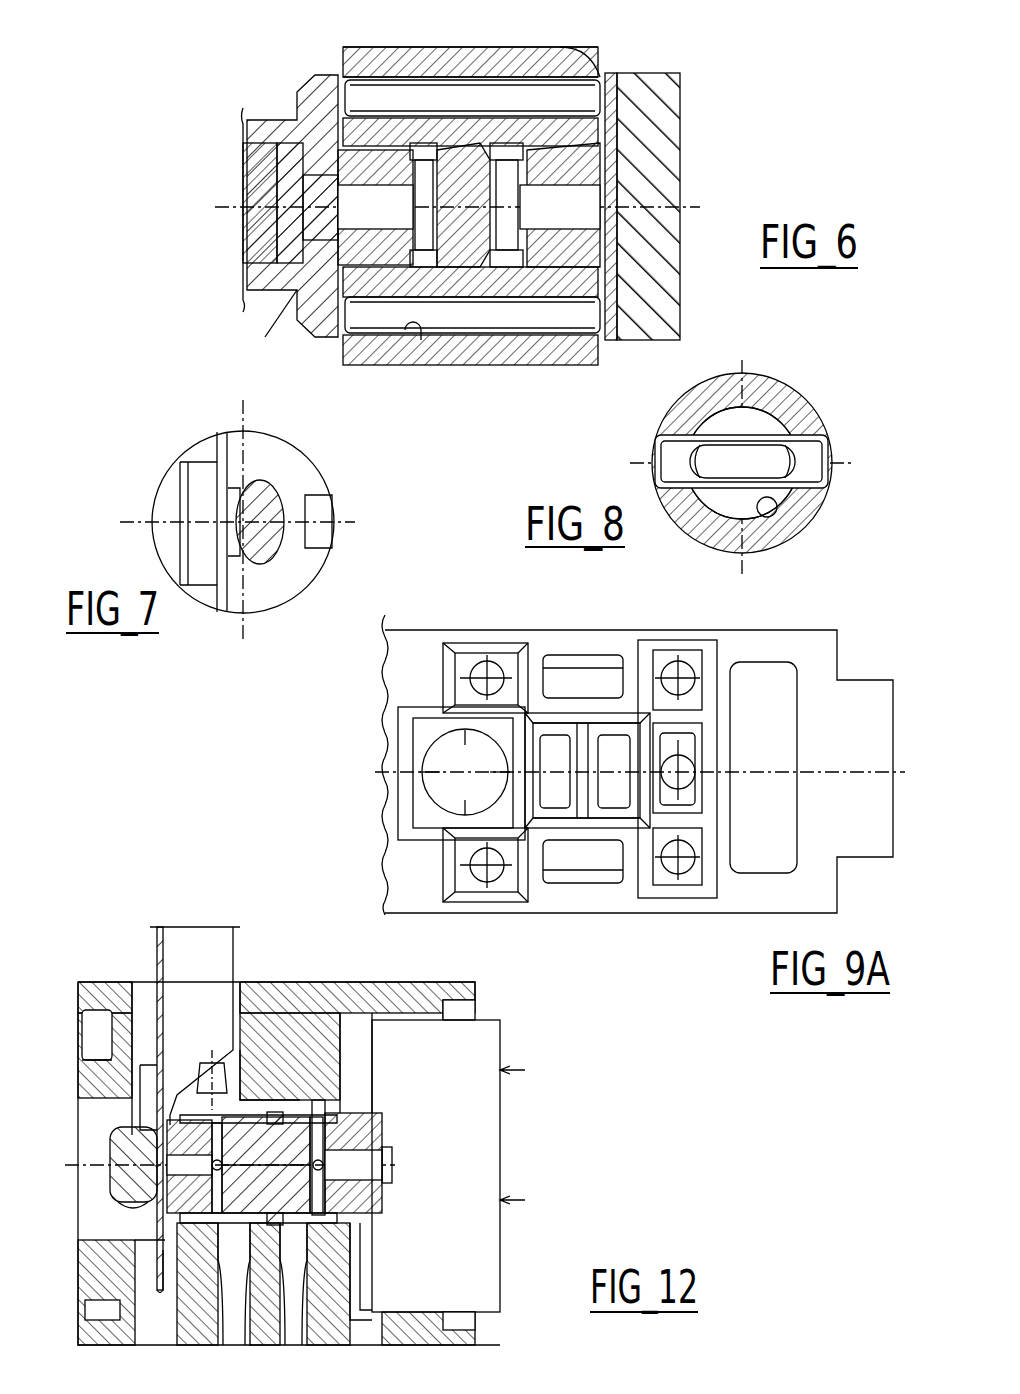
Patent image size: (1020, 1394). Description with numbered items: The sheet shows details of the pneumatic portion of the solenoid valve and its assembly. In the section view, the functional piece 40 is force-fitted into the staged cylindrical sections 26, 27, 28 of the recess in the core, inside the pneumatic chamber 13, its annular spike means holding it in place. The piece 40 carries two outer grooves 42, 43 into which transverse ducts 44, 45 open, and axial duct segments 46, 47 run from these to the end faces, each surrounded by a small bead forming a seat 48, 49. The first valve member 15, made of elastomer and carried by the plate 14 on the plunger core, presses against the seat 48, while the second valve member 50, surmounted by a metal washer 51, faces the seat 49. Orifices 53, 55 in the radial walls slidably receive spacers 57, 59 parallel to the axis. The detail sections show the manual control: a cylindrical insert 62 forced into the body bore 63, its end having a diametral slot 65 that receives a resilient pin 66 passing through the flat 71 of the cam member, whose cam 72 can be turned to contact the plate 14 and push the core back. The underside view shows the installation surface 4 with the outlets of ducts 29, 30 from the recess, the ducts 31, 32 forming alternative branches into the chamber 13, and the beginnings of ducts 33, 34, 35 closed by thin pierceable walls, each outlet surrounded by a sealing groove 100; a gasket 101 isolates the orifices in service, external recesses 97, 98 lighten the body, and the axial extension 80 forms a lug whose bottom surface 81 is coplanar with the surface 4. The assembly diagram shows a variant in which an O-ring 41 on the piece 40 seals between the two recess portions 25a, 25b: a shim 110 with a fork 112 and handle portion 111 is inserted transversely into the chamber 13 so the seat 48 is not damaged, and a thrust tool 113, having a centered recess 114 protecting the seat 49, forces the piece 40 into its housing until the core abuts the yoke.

In FIG. 9A, the bottom surface 4 is at (725, 645).
In FIG. 12, the second hollow section 13 is at (330, 985).
In FIG. 6, the plate 14 is at (290, 340).
In FIG. 7, the plate 14 is at (214, 442).
In FIG. 12, the plate 14 is at (115, 1003).
In FIG. 6, the first valve member 15 is at (248, 240).
In FIG. 12, the portion of the recess 25a is at (225, 1025).
In FIG. 12, the portion of the recess 25b is at (355, 1030).
In FIG. 6, the cylindrical section 26 is at (355, 305).
In FIG. 6, the cylindrical section 27 is at (430, 270).
In FIG. 6, the cylindrical section 28 is at (600, 255).
In FIG. 9A, the duct 29 is at (567, 782).
In FIG. 9A, the duct 30 is at (624, 782).
In FIG. 9A, the duct 31 is at (495, 872).
In FIG. 9A, the duct 32 is at (495, 672).
In FIG. 9A, the beginning of duct 33 is at (686, 865).
In FIG. 9A, the beginning of duct 34 is at (685, 780).
In FIG. 9A, the beginning of duct 35 is at (672, 672).
In FIG. 6, the functional piece 40 is at (570, 165).
In FIG. 12, the functional piece 40 is at (267, 1165).
In FIG. 12, the O-ring 41 is at (320, 1115).
In FIG. 6, the outer groove 42 is at (381, 162).
In FIG. 12, the outer groove 42 is at (272, 1100).
In FIG. 6, the outer groove 43 is at (585, 73).
In FIG. 12, the outer groove 43 is at (338, 1151).
In FIG. 6, the transverse duct 44 is at (420, 230).
In FIG. 12, the transverse duct 44 is at (266, 1183).
In FIG. 6, the transverse duct 45 is at (515, 270).
In FIG. 12, the transverse duct 45 is at (365, 1160).
In FIG. 6, the axial duct segment 46 is at (300, 318).
In FIG. 12, the axial duct segment 46 is at (252, 1169).
In FIG. 6, the axial duct segment 47 is at (585, 215).
In FIG. 12, the axial duct segment 47 is at (360, 1165).
In FIG. 12, the seat 48 is at (140, 1125).
In FIG. 12, the seat 49 is at (395, 1170).
In FIG. 6, the second valve member 50 is at (660, 303).
In FIG. 6, the metal washer 51 is at (610, 340).
In FIG. 6, the orifice 53 is at (585, 50).
In FIG. 6, the orifice 55 is at (415, 340).
In FIG. 6, the spacer 57 is at (450, 107).
In FIG. 6, the spacer 59 is at (500, 325).
In FIG. 8, the cylindrical insert 62 is at (775, 403).
In FIG. 8, the cylindrical bore 63 is at (780, 512).
In FIG. 8, the diametral slot 65 is at (668, 462).
In FIG. 8, the resilient pin 66 is at (715, 510).
In FIG. 8, the flat 71 is at (760, 466).
In FIG. 7, the cam 72 is at (278, 455).
In FIG. 9A, the axial extension 80 is at (857, 675).
In FIG. 9A, the bottom surface of the lug 81 is at (873, 818).
In FIG. 9A, the external recess 97 is at (597, 695).
In FIG. 9A, the external recess 98 is at (474, 784).
In FIG. 9A, the groove 100 is at (410, 710).
In FIG. 9A, the gasket 101 is at (640, 898).
In FIG. 12, the shim 110 is at (160, 935).
In FIG. 12, the handle portion 111 is at (187, 945).
In FIG. 12, the fork 112 is at (115, 1235).
In FIG. 12, the thrust tool 113 is at (482, 1222).
In FIG. 12, the centered recess 114 is at (395, 1170).